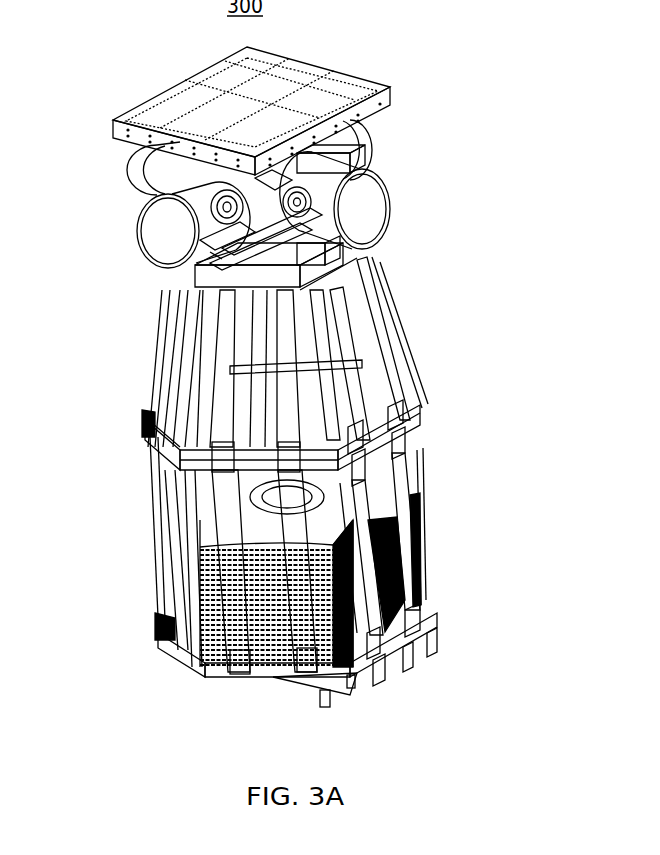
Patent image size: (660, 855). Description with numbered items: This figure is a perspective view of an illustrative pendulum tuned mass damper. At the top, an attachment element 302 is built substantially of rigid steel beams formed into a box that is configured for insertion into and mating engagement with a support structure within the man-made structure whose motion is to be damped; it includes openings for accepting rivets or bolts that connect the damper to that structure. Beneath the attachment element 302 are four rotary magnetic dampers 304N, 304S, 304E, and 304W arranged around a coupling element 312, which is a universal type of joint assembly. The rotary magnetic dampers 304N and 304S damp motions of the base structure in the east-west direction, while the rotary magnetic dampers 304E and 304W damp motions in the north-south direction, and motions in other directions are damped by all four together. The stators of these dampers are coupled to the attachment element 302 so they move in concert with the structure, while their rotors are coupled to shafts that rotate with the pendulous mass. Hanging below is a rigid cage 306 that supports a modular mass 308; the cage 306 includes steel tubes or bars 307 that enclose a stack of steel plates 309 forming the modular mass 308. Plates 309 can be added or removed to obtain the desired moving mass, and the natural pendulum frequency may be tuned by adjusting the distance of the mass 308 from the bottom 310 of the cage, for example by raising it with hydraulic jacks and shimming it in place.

The attachment element 302 is at (392, 100).
The rotary magnetic damper 304W is at (125, 172).
The rotary magnetic damper 304N is at (376, 134).
The rotary magnetic damper 304S is at (139, 228).
The rotary magnetic damper 304E is at (389, 210).
The coupling element 312 is at (360, 155).
The rigid cage 306 is at (383, 475).
The steel tubes or bars 307 is at (398, 470).
The modular mass 308 is at (368, 573).
The steel plates 309 is at (472, 481).
The bottom of the cage 310 is at (350, 648).